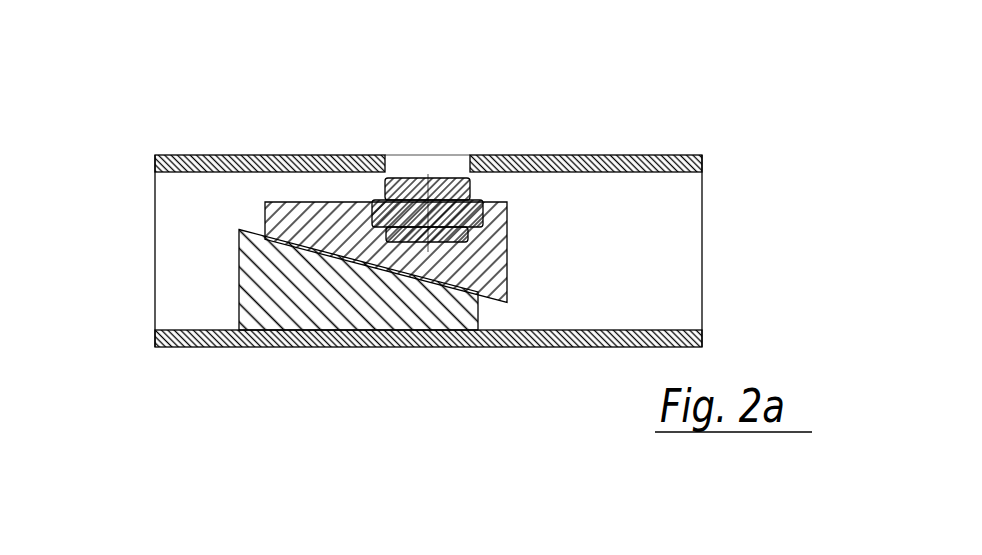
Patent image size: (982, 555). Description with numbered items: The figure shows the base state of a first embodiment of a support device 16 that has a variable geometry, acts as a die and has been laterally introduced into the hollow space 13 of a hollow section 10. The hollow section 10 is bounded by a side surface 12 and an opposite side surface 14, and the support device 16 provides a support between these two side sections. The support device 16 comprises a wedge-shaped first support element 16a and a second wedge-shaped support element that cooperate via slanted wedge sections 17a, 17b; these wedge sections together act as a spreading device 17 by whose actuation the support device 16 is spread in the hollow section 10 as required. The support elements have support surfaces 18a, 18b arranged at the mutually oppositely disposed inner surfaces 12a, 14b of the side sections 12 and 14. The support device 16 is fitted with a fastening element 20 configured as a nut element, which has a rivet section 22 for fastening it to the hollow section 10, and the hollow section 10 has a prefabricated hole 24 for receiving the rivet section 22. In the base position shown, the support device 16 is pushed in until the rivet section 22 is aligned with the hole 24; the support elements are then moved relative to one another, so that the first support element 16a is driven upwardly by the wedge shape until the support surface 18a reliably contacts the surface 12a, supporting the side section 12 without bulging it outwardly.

The hollow section 10 is at (672, 115).
The side surface 12 is at (269, 150).
The surface 12a is at (172, 172).
The hollow space 13 is at (672, 286).
The side surface 14 is at (308, 349).
The surface 14b is at (177, 328).
The support device 16 is at (426, 218).
The first support element 16a is at (507, 245).
The spreading device 17 is at (373, 168).
The wedge section 17a is at (308, 238).
The wedge section 17b is at (265, 237).
The support surface 18a is at (265, 237).
The support surface 18b is at (360, 329).
The fastening element 20 is at (488, 207).
The rivet section 22 is at (478, 190).
The hole 24 is at (411, 153).